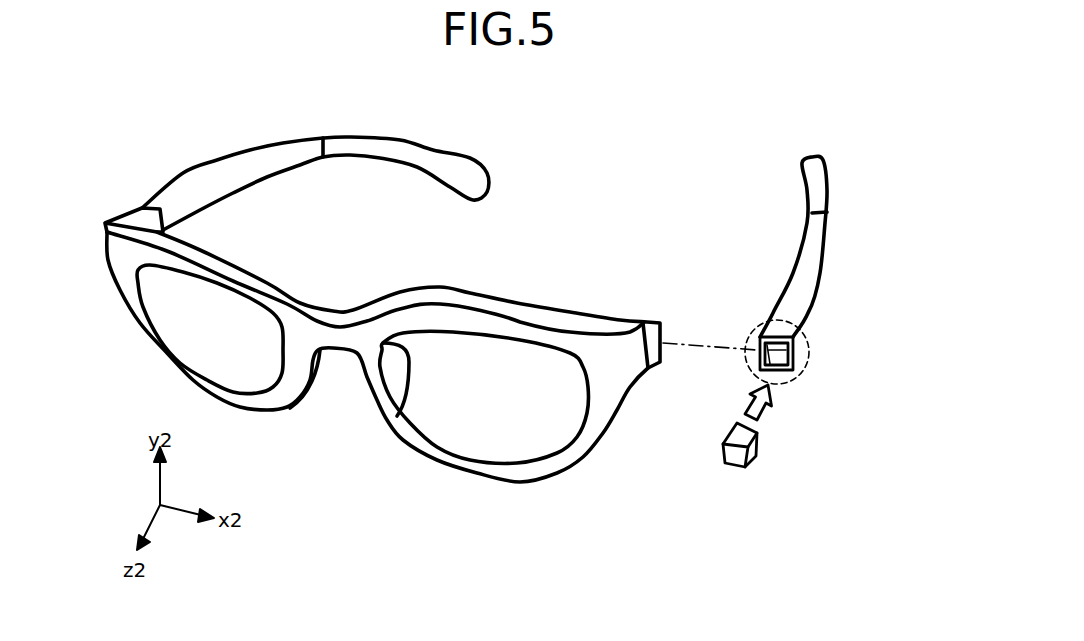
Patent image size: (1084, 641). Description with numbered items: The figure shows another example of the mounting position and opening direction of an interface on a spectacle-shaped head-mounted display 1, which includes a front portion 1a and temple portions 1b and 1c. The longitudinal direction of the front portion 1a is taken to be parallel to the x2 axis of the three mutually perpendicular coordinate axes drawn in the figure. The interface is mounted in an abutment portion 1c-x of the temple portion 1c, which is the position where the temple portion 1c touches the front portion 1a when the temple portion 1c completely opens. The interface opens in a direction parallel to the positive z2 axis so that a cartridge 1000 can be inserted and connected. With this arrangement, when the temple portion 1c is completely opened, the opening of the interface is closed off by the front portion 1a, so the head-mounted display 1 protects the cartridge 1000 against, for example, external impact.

The head-mounted display 1 is at (333, 272).
The front portion 1a is at (517, 304).
The temple portion 1b is at (260, 163).
The temple portion 1c is at (812, 282).
The abutment portion 1c-x is at (780, 372).
The cartridge 1000 is at (755, 450).